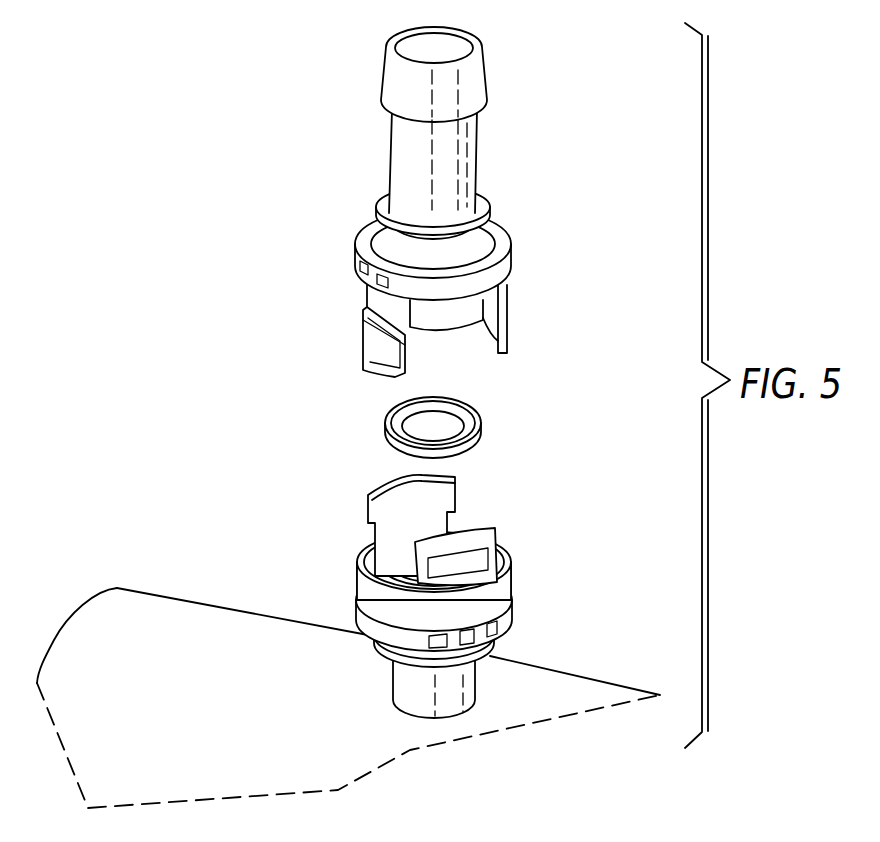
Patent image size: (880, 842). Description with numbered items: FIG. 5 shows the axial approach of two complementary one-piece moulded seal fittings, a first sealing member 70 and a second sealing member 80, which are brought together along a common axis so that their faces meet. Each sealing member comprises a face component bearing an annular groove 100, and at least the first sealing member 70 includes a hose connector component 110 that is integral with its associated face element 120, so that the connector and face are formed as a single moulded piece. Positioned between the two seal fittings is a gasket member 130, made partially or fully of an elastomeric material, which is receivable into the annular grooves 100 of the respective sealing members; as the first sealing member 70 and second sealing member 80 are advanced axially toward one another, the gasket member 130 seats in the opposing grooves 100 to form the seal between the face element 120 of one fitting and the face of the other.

The first sealing member 70 is at (457, 596).
The second sealing member 80 is at (418, 209).
The annular groove 100 is at (375, 555).
The hose connector component 110 is at (477, 150).
The face element 120 is at (472, 355).
The gasket member 130 is at (482, 433).